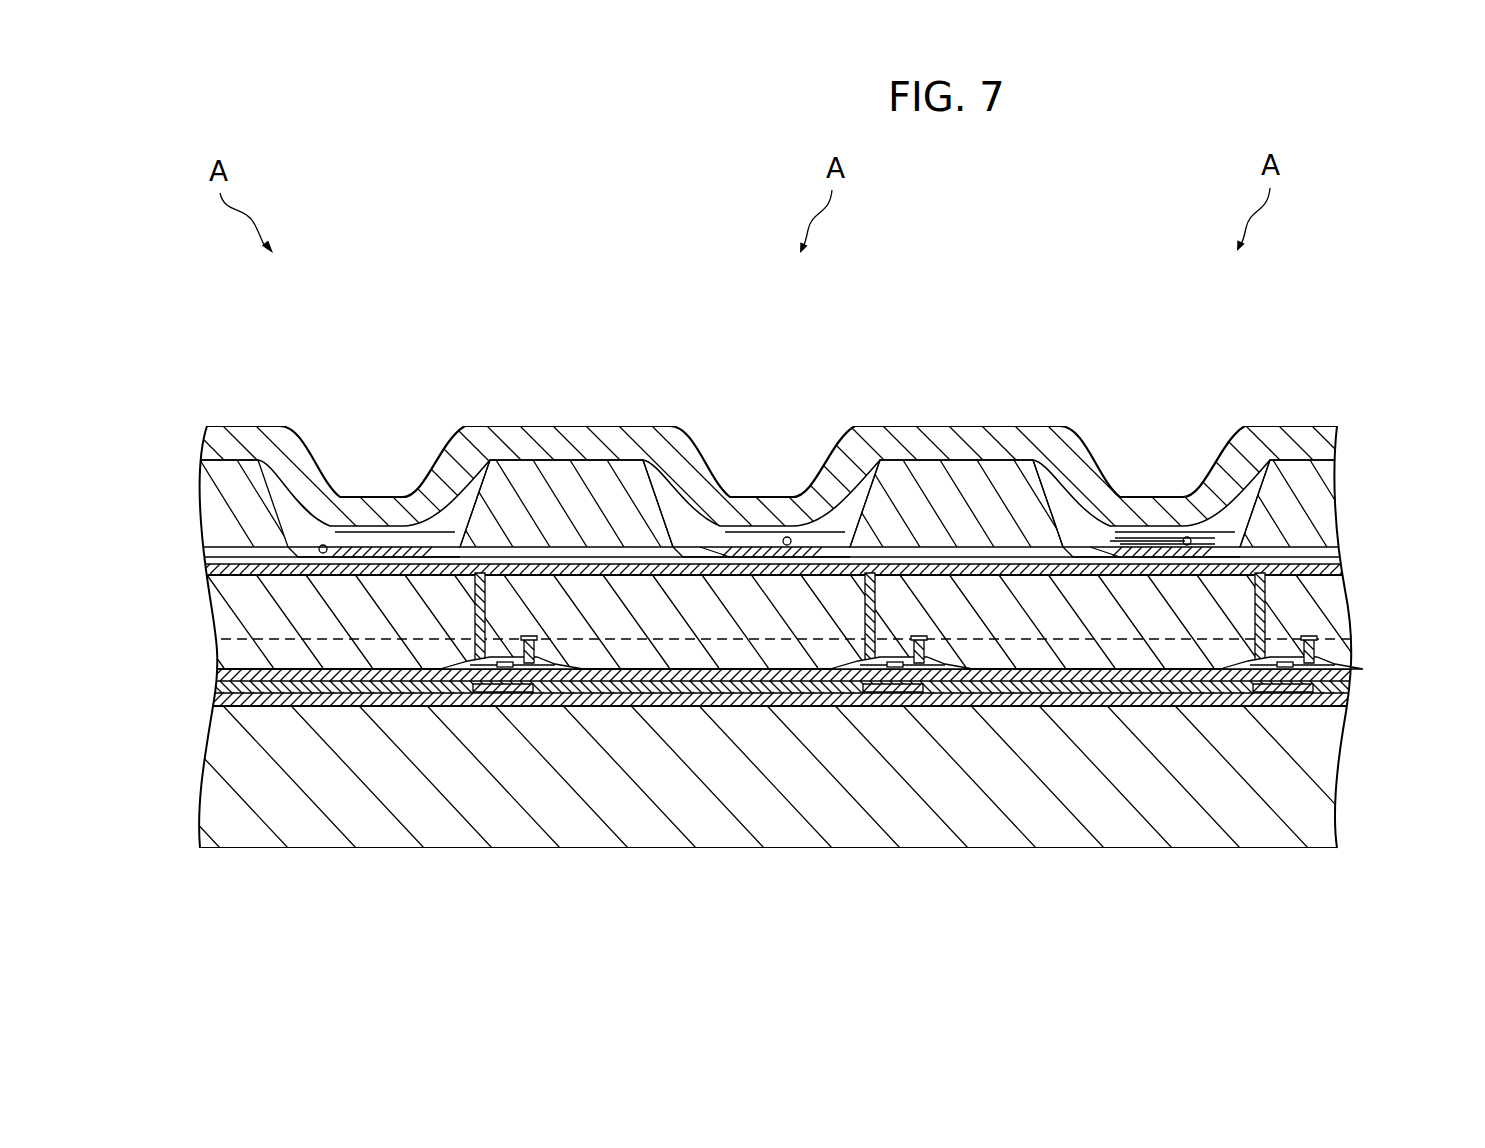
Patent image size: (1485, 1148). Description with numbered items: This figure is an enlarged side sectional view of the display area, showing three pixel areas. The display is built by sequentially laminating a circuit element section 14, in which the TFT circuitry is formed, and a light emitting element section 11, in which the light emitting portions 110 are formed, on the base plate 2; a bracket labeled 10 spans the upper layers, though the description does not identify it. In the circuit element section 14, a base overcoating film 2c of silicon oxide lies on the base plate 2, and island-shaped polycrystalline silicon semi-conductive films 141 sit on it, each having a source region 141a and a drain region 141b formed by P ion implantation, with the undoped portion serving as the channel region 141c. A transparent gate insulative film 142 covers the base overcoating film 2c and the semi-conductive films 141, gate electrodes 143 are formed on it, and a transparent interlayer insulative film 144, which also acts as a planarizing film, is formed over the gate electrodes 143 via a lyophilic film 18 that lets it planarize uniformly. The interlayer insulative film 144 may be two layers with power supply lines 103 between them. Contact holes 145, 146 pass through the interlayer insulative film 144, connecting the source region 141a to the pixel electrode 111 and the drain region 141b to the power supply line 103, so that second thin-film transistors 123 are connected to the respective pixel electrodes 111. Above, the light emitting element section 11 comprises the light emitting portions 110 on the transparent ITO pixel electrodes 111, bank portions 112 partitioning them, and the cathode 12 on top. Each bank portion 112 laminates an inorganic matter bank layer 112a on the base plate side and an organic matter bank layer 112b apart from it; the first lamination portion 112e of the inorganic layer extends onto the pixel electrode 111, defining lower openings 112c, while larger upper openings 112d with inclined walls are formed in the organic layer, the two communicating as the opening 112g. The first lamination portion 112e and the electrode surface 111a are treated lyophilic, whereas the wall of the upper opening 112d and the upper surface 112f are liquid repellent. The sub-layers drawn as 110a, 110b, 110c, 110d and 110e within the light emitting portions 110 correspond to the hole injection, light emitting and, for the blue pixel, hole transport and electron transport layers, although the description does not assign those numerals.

The base plate 2 is at (1327, 807).
The base overcoating film 2c is at (1350, 702).
The light emitting element portion 10 is at (1360, 420).
The light emitting element section 11 is at (187, 460).
The cathode 12 is at (207, 430).
The circuit element section 14 is at (187, 580).
The lyophilic film 18 is at (1352, 670).
The power supply lines 103 is at (550, 655).
The light emitting portions 110 is at (770, 381).
The hole injection layer 110a is at (420, 536).
The light emitting layer 110b is at (330, 522).
The hole transport layer 110c is at (1108, 512).
The electron transport layer 110d is at (1178, 537).
The electron injection layer 110e is at (1155, 512).
The pixel electrodes 111 is at (655, 562).
The electrode surface 111a is at (325, 576).
The bank portion 112 is at (795, 381).
The inorganic matter bank layer 112a is at (522, 536).
The organic matter bank layer 112b is at (585, 492).
The lower openings 112c is at (715, 556).
The upper openings 112d is at (880, 472).
The first lamination portion 112e is at (705, 546).
The upper surface 112f is at (465, 476).
The opening 112g is at (262, 428).
The second thin-film transistors 123 is at (860, 744).
The semi-conductive films 141 is at (846, 741).
The source region 141a is at (470, 670).
The drain region 141b is at (512, 670).
The channel region 141c is at (502, 682).
The gate insulative film 142 is at (1352, 683).
The gate electrodes 143 is at (531, 637).
The interlayer insulative film 144 is at (1347, 637).
The contact holes 145 is at (476, 600).
The contact holes 146 is at (567, 705).